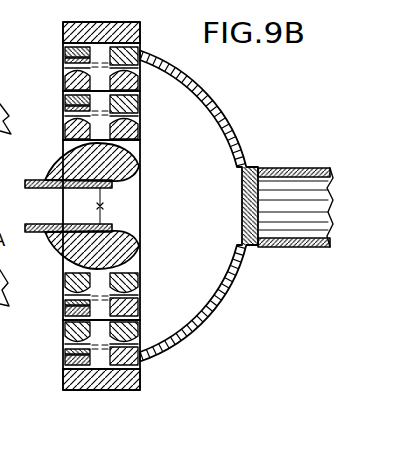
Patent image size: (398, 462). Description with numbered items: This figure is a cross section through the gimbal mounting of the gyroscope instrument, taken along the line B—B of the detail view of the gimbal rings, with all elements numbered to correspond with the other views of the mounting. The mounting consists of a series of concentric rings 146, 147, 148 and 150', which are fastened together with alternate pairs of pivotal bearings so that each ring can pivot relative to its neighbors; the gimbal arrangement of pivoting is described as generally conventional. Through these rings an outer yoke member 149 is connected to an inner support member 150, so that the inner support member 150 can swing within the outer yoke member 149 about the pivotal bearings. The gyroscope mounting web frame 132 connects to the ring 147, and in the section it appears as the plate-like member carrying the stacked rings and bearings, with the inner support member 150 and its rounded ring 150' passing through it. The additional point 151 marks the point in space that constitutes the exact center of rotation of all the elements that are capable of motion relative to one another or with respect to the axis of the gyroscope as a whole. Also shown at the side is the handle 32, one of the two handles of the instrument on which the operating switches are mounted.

The handle 32 is at (313, 134).
The gyroscope mounting web frame 132 is at (129, 397).
The concentric ring 146 is at (141, 83).
The concentric ring 147 is at (141, 112).
The concentric ring 148 is at (141, 132).
The outer yoke member 149 is at (182, 328).
The inner support member 150 is at (57, 191).
The concentric ring 150' is at (120, 206).
The center of rotation 151 is at (107, 207).